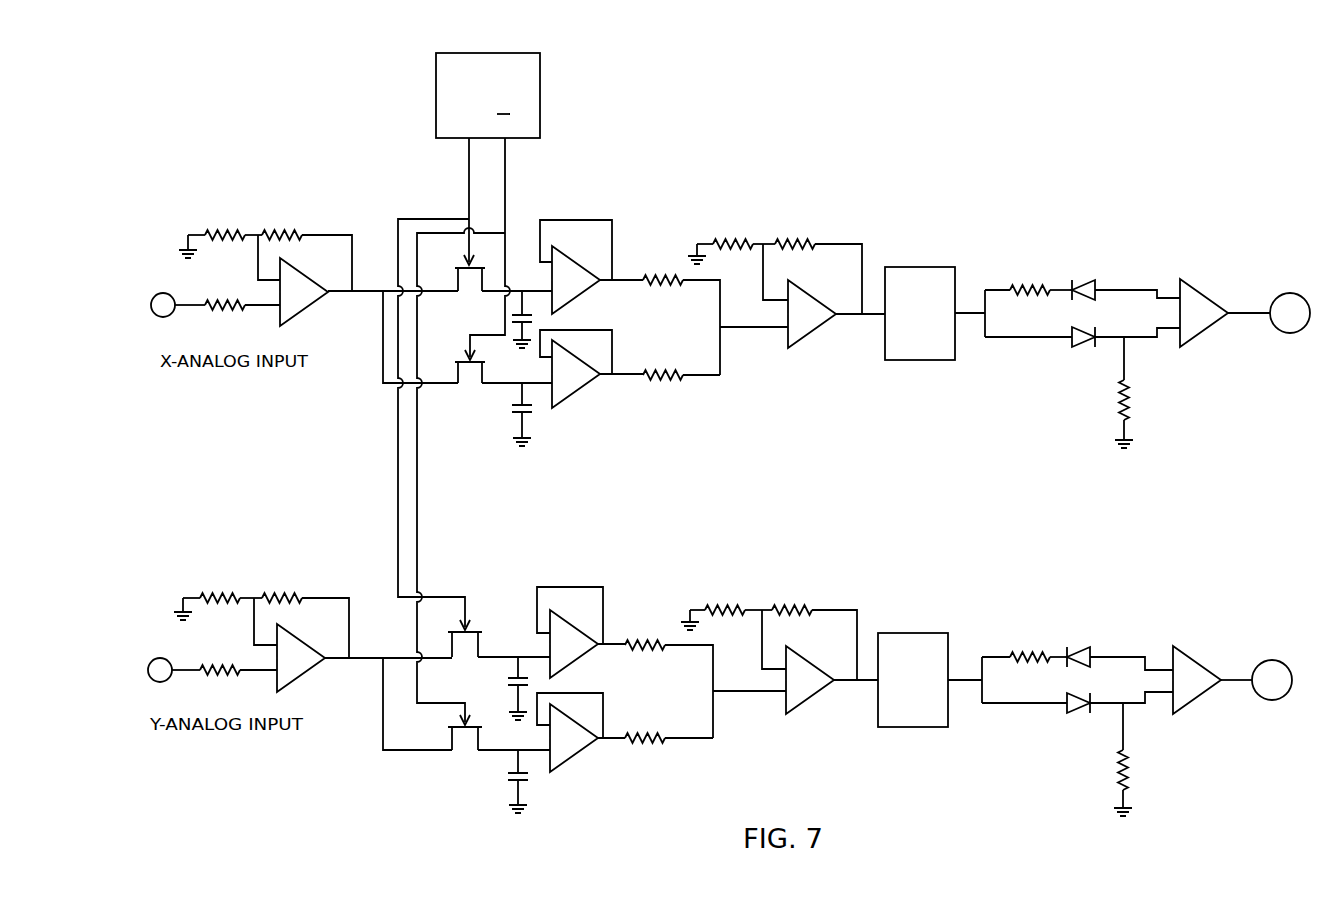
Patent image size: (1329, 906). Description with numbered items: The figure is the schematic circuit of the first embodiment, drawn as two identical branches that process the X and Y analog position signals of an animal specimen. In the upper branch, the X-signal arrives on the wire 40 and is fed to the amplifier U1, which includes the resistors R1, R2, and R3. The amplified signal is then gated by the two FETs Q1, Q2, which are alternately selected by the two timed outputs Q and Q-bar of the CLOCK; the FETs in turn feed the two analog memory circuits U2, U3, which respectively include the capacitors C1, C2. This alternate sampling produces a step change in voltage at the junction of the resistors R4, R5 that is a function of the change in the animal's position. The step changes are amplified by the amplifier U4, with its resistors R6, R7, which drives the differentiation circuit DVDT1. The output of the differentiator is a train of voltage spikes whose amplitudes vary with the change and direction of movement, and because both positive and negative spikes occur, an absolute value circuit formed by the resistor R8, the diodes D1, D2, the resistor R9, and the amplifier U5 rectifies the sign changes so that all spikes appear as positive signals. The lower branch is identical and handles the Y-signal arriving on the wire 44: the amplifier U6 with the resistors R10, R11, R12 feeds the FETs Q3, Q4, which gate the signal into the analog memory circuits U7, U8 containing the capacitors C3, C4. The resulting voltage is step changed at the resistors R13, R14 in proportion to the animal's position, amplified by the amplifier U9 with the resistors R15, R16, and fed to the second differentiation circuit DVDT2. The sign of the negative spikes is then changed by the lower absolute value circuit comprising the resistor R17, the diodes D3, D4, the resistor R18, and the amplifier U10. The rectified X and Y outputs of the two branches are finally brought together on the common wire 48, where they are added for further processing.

The wire 40 is at (184, 302).
The wire 44 is at (180, 668).
The common wire 48 is at (1243, 312).
The clock CLOCK is at (488, 95).
The amplifier U1 is at (304, 288).
The analog memory circuit U2 is at (591, 267).
The analog memory circuit U3 is at (591, 369).
The amplifier U4 is at (836, 317).
The amplifier of absolute value circuit U5 is at (1225, 310).
The amplifier U6 is at (301, 654).
The analog memory circuit U7 is at (581, 632).
The analog memory circuit U8 is at (581, 732).
The amplifier U9 is at (832, 686).
The amplifier of absolute value circuit U10 is at (1212, 679).
The FET Q1 is at (453, 277).
The FET Q2 is at (453, 374).
The FET Q3 is at (449, 644).
The FET Q4 is at (449, 739).
The capacitor C1 is at (529, 319).
The capacitor C2 is at (509, 414).
The capacitor C3 is at (500, 688).
The capacitor C4 is at (499, 781).
The resistor R1 is at (242, 317).
The resistor R2 is at (220, 233).
The resistor R3 is at (307, 249).
The resistor R4 is at (681, 325).
The resistor R5 is at (681, 388).
The resistor R6 is at (731, 243).
The resistor R7 is at (818, 268).
The resistor R8 is at (1041, 281).
The resistor R9 is at (1137, 392).
The resistor R10 is at (238, 682).
The resistor R11 is at (218, 597).
The resistor R12 is at (305, 616).
The resistor R13 is at (669, 689).
The resistor R14 is at (669, 750).
The resistor R15 is at (726, 607).
The resistor R16 is at (814, 632).
The resistor R17 is at (1036, 647).
The resistor R18 is at (1140, 759).
The diode D1 is at (1126, 277).
The diode D2 is at (1126, 352).
The diode D3 is at (1120, 649).
The diode D4 is at (1120, 721).
The differentiation circuit dv/dt DVDT1 is at (920, 313).
The differentiation circuit dv/dt DVDT2 is at (913, 680).